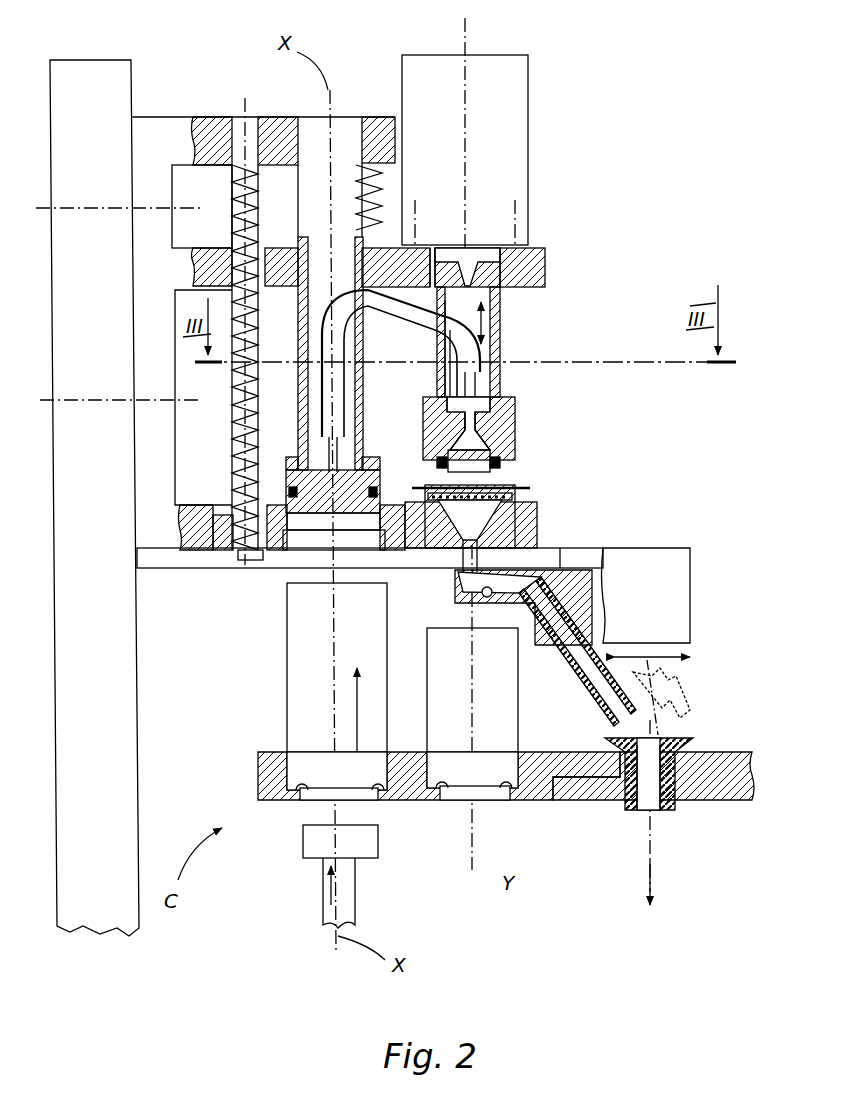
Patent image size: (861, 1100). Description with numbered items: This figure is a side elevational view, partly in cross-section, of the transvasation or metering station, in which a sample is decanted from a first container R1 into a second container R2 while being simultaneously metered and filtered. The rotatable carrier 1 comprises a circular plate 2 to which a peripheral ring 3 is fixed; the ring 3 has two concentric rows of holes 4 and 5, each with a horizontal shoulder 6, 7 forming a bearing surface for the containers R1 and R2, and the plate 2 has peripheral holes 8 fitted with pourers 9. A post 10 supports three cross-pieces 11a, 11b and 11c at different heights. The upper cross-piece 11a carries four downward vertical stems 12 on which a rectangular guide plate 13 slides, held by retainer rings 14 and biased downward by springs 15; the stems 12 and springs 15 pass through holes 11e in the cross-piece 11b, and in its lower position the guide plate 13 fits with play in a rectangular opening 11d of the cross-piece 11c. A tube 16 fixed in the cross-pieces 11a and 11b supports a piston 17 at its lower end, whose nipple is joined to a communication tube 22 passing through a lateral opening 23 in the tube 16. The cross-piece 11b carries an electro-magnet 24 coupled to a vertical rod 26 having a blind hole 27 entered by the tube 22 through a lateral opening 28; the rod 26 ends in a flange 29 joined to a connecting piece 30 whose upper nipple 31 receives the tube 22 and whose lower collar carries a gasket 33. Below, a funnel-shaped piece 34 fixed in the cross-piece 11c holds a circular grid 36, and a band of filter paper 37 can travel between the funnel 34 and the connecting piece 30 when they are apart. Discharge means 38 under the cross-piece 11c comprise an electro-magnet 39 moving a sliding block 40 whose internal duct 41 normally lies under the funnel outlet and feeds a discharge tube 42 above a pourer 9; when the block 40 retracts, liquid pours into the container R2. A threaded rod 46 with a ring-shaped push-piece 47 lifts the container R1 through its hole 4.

The carrier 1 is at (467, 45).
The circular plate 2 is at (730, 790).
The peripheral ring 3 is at (262, 780).
The hole 4 is at (380, 792).
The hole 5 is at (515, 800).
The horizontal shoulder 6 is at (300, 792).
The horizontal shoulder 7 is at (447, 800).
The hole 8 is at (627, 800).
The pourer 9 is at (672, 800).
The post 10 is at (140, 108).
The upper cross-piece 11a is at (380, 135).
The cross-piece 11b is at (546, 262).
The cross-piece 11c is at (540, 530).
The rectangular opening 11d is at (220, 512).
The hole 11e is at (235, 248).
The vertical stem 12 is at (233, 440).
The guide plate 13 is at (225, 532).
The retainer ring 14 is at (233, 556).
The spring 15 is at (233, 200).
The tube 16 is at (303, 420).
The piston 17 is at (325, 506).
The communication tube 22 is at (417, 330).
The lateral opening 23 is at (360, 378).
The electro-magnet 24 is at (512, 150).
The vertical rod 26 is at (500, 352).
The blind hole 27 is at (492, 327).
The lateral opening 28 is at (441, 378).
The flange 29 is at (515, 405).
The connecting piece 30 is at (515, 447).
The upper nipple 31 is at (490, 400).
The gasket 33 is at (505, 463).
The funnel-shaped piece 34 is at (532, 490).
The circular grid 36 is at (520, 495).
The band of filter paper 37 is at (420, 487).
The discharge means 38 is at (670, 545).
The electro-magnet 39 is at (690, 598).
The sliding block 40 is at (545, 645).
The internal duct 41 is at (478, 597).
The discharge tube 42 is at (662, 696).
The threaded rod 46 is at (355, 902).
The push-piece 47 is at (312, 845).
The first container R1 is at (287, 716).
The second container R2 is at (520, 735).